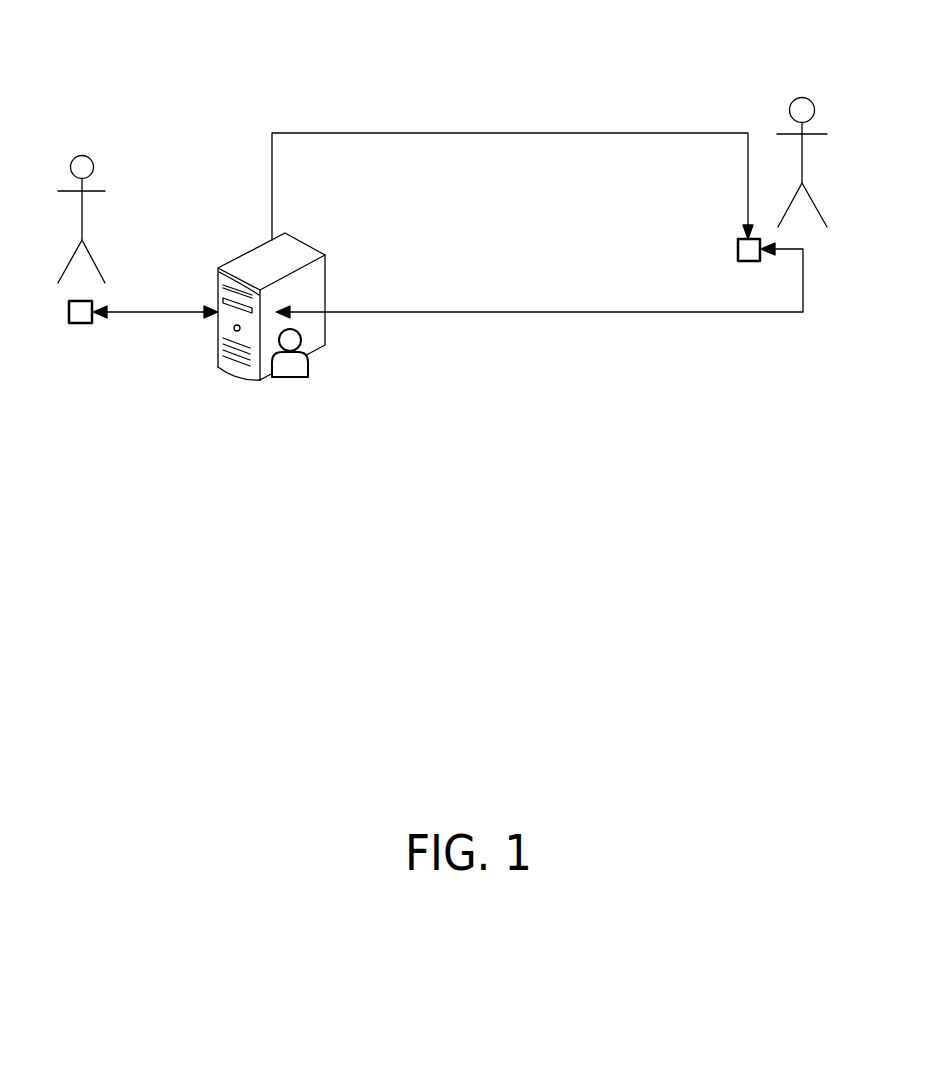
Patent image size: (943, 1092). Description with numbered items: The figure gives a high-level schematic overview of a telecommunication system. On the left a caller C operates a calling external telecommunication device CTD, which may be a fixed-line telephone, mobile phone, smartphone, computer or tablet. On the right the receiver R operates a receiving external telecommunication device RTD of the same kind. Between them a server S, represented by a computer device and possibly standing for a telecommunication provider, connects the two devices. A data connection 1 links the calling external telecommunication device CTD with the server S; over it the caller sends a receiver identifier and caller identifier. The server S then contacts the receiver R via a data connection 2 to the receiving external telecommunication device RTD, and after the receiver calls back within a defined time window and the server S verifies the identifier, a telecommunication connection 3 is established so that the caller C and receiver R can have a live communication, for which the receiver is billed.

The caller C is at (70, 154).
The calling external telecommunication device CTD is at (82, 316).
The data connection 1 is at (153, 310).
The server S is at (312, 284).
The data connection 2 is at (415, 132).
The telecommunication connection 3 is at (545, 312).
The receiver R is at (790, 100).
The receiving external telecommunication device RTD is at (737, 247).